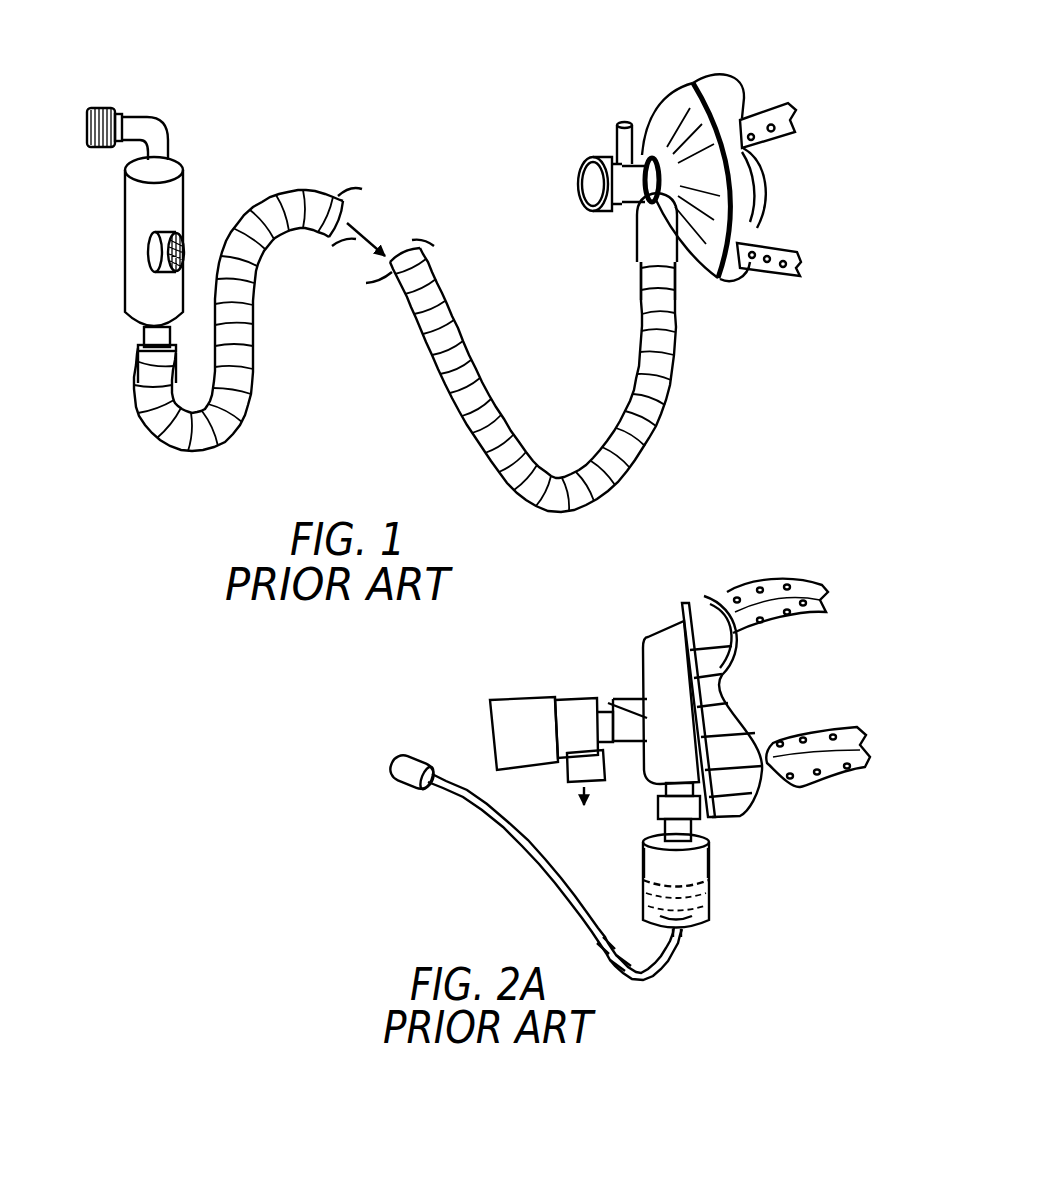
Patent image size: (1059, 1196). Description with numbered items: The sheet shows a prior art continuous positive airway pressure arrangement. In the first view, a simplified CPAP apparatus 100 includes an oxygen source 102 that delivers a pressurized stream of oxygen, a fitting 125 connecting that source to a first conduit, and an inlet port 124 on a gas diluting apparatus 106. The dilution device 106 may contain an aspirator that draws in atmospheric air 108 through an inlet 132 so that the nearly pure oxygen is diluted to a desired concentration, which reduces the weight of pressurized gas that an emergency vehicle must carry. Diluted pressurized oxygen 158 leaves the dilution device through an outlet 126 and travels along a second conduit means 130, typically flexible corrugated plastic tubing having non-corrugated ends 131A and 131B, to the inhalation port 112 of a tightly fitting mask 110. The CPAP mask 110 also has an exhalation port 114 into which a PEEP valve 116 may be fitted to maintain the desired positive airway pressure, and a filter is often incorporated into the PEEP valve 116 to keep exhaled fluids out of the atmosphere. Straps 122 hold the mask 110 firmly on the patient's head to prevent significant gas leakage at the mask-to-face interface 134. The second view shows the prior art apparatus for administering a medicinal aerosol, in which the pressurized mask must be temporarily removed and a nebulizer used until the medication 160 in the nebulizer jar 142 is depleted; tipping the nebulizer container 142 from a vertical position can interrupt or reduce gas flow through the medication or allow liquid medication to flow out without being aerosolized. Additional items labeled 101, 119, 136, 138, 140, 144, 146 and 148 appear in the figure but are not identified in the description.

In FIG. 1, the CPAP apparatus 100 is at (749, 64).
In FIG. 2A, the prior art nebulizer system with gas delivery tube 101 is at (714, 513).
In FIG. 1, the oxygen source 102 is at (80, 118).
In FIG. 2A, the oxygen source 102 is at (380, 763).
In FIG. 1, the gas diluting apparatus 106 is at (177, 193).
In FIG. 1, the atmospheric air 108 is at (273, 267).
In FIG. 1, the CPAP face mask 110 is at (722, 190).
In FIG. 2A, the CPAP face mask 110 is at (670, 650).
In FIG. 1, the inhalation port 112 is at (650, 243).
In FIG. 2A, the inhalation port 112 is at (677, 807).
In FIG. 1, the exhalation port 114 is at (632, 188).
In FIG. 2A, the exhalation port 114 is at (637, 717).
In FIG. 1, the PEEP valve 116 is at (617, 150).
In FIG. 2A, the PEEP valve 116 is at (523, 720).
In FIG. 1, the exhaust flow 119 is at (585, 197).
In FIG. 1, the straps 122 is at (760, 128).
In FIG. 2A, the straps 122 is at (800, 607).
In FIG. 1, the inlet port 124 is at (167, 160).
In FIG. 1, the fitting 125 is at (98, 107).
In FIG. 1, the outlet 126 is at (147, 340).
In FIG. 1, the second conduit means 130 is at (430, 323).
In FIG. 1, the non-corrugated end 131A is at (150, 373).
In FIG. 1, the non-corrugated end 131B is at (660, 272).
In FIG. 1, the inlet 132 is at (287, 287).
In FIG. 1, the mask-to-face interface 134 is at (760, 223).
In FIG. 2A, the mask-to-face interface 134 is at (735, 670).
In FIG. 2A, the gas delivery tube 136 is at (503, 827).
In FIG. 2A, the tube connector 138 is at (405, 782).
In FIG. 2A, the nebulizer 140 is at (786, 878).
In FIG. 2A, the nebulizer jar 142 is at (693, 903).
In FIG. 2A, the nebulizer cup 144 is at (697, 863).
In FIG. 2A, the gas inlet tube 146 is at (681, 932).
In FIG. 2A, the nebulizer connector 148 is at (668, 827).
In FIG. 1, the diluted pressurized oxygen 158 is at (365, 230).
In FIG. 2A, the medication 160 is at (678, 905).